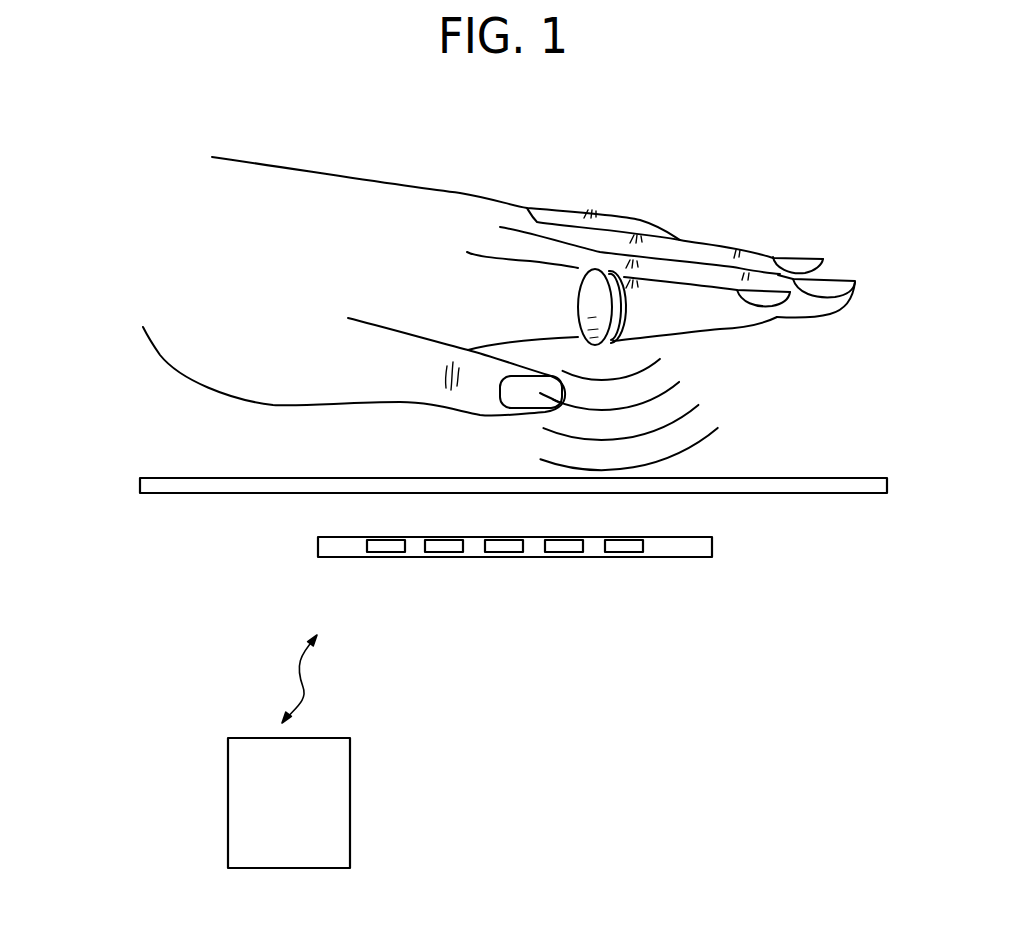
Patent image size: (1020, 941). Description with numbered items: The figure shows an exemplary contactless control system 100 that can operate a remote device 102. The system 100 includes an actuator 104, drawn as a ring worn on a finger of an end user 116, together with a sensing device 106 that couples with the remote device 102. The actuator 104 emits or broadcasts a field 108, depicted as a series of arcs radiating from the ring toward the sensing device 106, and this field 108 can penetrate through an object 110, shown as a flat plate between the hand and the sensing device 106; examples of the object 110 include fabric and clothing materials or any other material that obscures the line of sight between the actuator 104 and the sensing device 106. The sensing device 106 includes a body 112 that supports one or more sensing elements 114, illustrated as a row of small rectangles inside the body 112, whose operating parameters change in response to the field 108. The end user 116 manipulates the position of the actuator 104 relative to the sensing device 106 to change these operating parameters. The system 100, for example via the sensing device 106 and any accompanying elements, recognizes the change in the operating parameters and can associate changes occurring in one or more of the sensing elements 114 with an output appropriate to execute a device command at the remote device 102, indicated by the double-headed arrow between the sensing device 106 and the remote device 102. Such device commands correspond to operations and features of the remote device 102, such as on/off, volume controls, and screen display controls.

The contactless control system 100 is at (742, 170).
The remote device 102 is at (302, 807).
The actuator 104 is at (601, 278).
The sensing device 106 is at (287, 553).
The field 108 is at (723, 388).
The object 110 is at (130, 485).
The body 112 is at (712, 547).
The sensing element 114 is at (632, 547).
The end user 116 is at (530, 208).